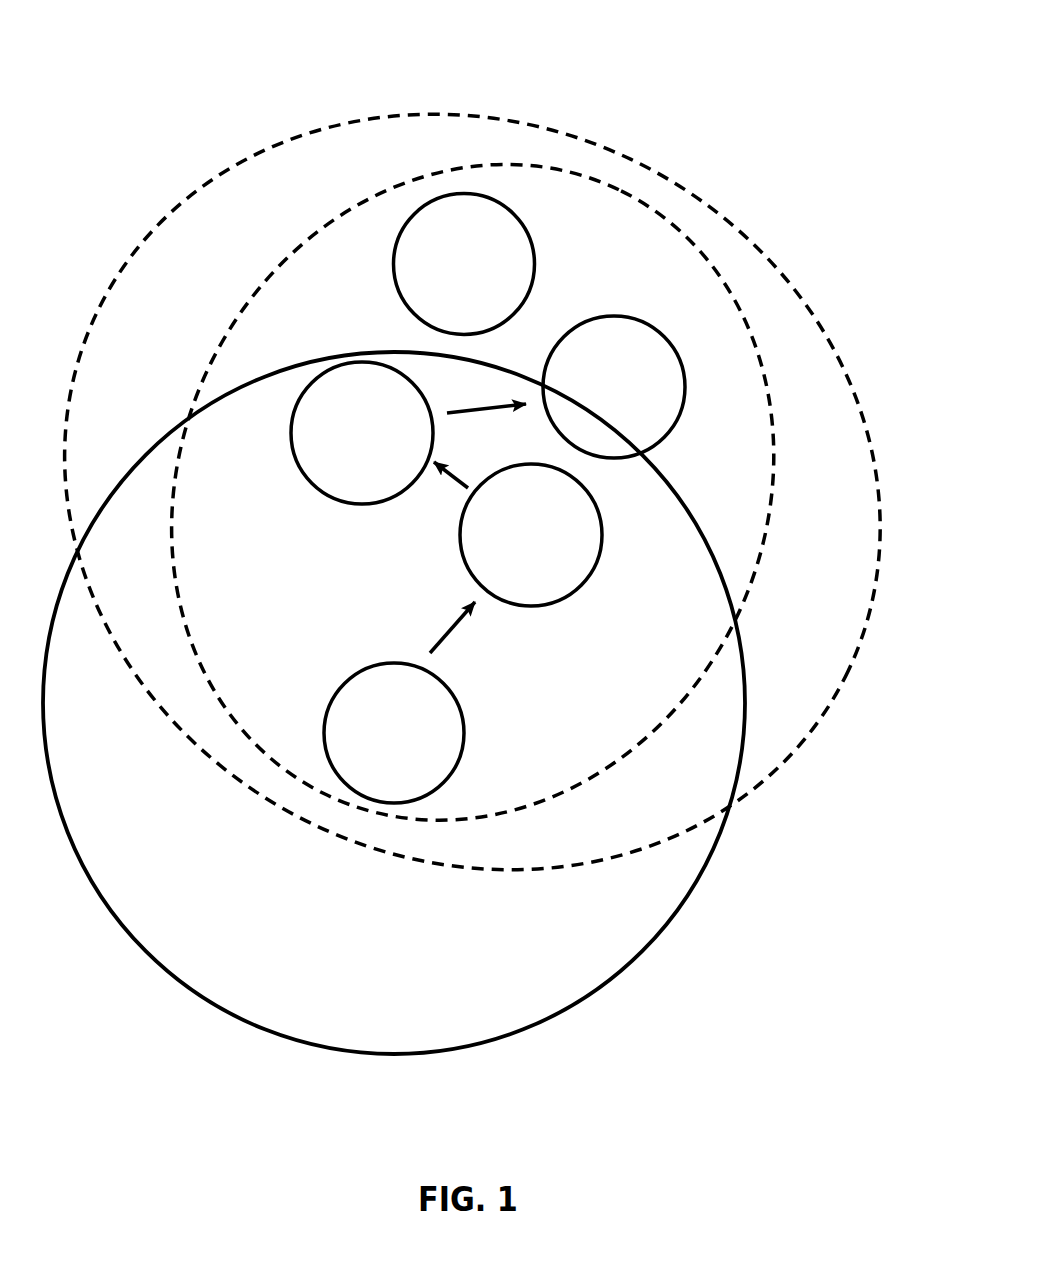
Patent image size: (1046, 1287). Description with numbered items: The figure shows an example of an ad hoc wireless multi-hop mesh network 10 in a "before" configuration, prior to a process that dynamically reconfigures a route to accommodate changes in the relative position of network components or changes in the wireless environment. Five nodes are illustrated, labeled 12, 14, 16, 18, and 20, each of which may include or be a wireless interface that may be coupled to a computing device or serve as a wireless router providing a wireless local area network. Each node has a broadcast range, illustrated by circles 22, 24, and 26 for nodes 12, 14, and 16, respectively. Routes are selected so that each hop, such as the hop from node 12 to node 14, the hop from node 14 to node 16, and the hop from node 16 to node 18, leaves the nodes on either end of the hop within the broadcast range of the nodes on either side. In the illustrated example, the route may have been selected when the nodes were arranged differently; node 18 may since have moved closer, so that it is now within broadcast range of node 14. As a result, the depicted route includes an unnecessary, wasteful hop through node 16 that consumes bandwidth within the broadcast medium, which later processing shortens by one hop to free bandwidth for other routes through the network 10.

The ad hoc wireless multi-hop mesh network 10 is at (611, 15).
The node 12 is at (521, 741).
The node 14 is at (645, 575).
The node 16 is at (291, 452).
The node 18 is at (703, 442).
The node 20 is at (592, 272).
The circle 22 is at (718, 931).
The circle 24 is at (832, 783).
The circle 26 is at (598, 816).